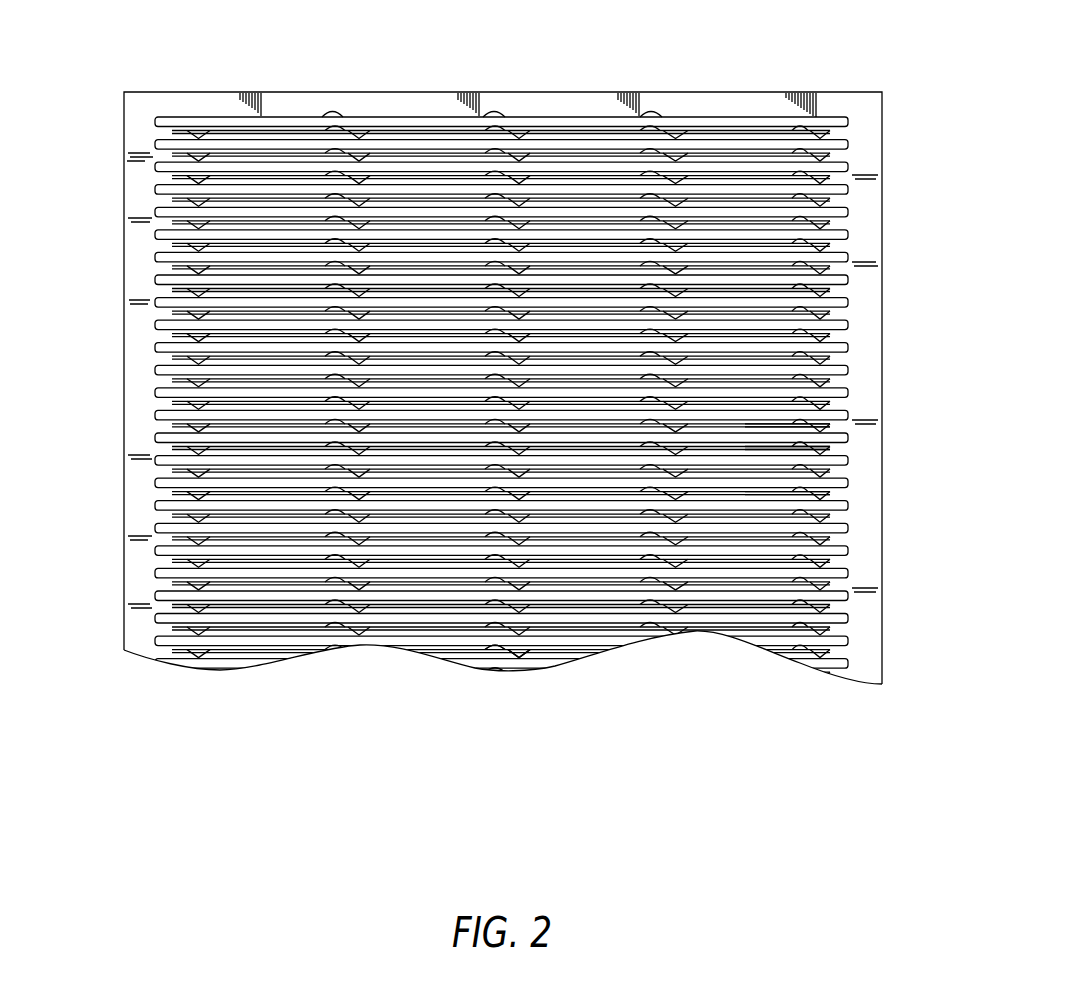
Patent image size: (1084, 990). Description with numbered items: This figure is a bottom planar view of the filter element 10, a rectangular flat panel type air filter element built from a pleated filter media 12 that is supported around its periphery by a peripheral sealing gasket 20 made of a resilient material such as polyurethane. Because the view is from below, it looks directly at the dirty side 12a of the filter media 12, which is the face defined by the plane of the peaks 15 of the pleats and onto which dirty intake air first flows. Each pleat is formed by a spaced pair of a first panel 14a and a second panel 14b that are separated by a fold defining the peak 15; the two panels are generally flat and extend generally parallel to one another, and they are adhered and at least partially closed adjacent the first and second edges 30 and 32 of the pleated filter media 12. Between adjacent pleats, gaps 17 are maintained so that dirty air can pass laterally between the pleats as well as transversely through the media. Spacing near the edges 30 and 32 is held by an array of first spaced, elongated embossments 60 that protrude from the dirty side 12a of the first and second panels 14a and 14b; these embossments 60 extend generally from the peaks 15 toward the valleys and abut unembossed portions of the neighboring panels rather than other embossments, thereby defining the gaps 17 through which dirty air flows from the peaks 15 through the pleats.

The filter element 10 is at (260, 716).
The pleated filter media 12 is at (503, 412).
The dirty side of the filter media 12a is at (740, 604).
The first panel 14a is at (738, 117).
The second panel 14b is at (566, 654).
The peaks 15 is at (501, 436).
The gaps 17 is at (747, 497).
The peripheral sealing gasket 20 is at (136, 290).
The first edge of the pleated filter media 30 is at (850, 573).
The second edge of the pleated filter media 32 is at (153, 213).
The first elongated embossments 60 is at (492, 652).